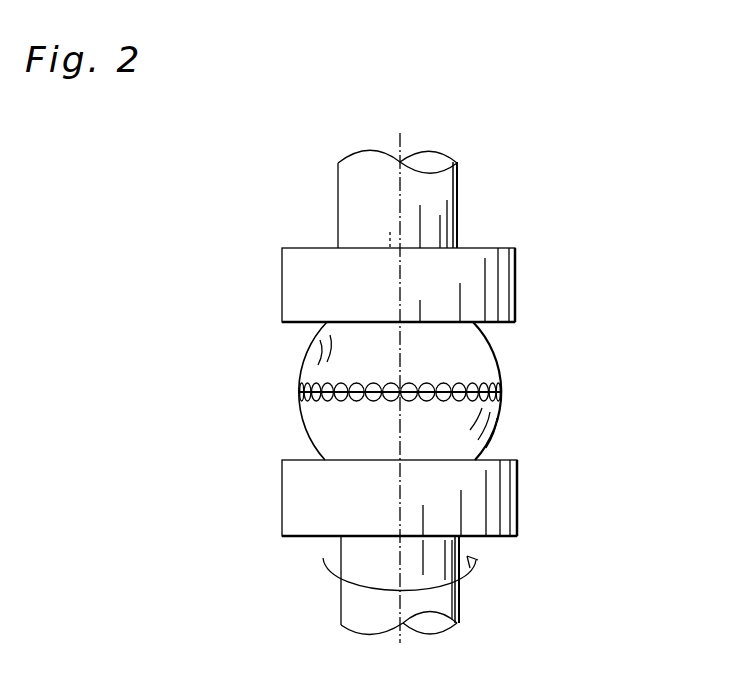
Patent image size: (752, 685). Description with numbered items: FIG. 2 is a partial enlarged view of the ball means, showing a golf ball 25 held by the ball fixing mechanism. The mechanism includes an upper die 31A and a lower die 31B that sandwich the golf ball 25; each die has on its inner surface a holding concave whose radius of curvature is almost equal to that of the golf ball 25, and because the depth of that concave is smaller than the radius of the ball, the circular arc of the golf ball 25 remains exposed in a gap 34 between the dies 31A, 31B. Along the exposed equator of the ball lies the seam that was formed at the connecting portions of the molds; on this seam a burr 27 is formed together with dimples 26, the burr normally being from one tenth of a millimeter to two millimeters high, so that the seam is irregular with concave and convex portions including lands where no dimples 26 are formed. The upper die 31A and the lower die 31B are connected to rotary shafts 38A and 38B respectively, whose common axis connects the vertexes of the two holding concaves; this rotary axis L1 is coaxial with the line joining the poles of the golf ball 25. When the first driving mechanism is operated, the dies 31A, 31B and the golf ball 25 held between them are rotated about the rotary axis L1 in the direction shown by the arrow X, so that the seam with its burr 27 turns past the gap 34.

The rotary axis L1 is at (400, 135).
The rotary shaft 38A is at (458, 190).
The rotary shaft 38B is at (463, 593).
The upper die 31A is at (288, 290).
The lower die 31B is at (287, 508).
The gap 34 is at (497, 352).
The golf ball 25 is at (490, 418).
The dimples 26 is at (338, 383).
The burr 27 is at (296, 393).
The arrow X is at (410, 570).